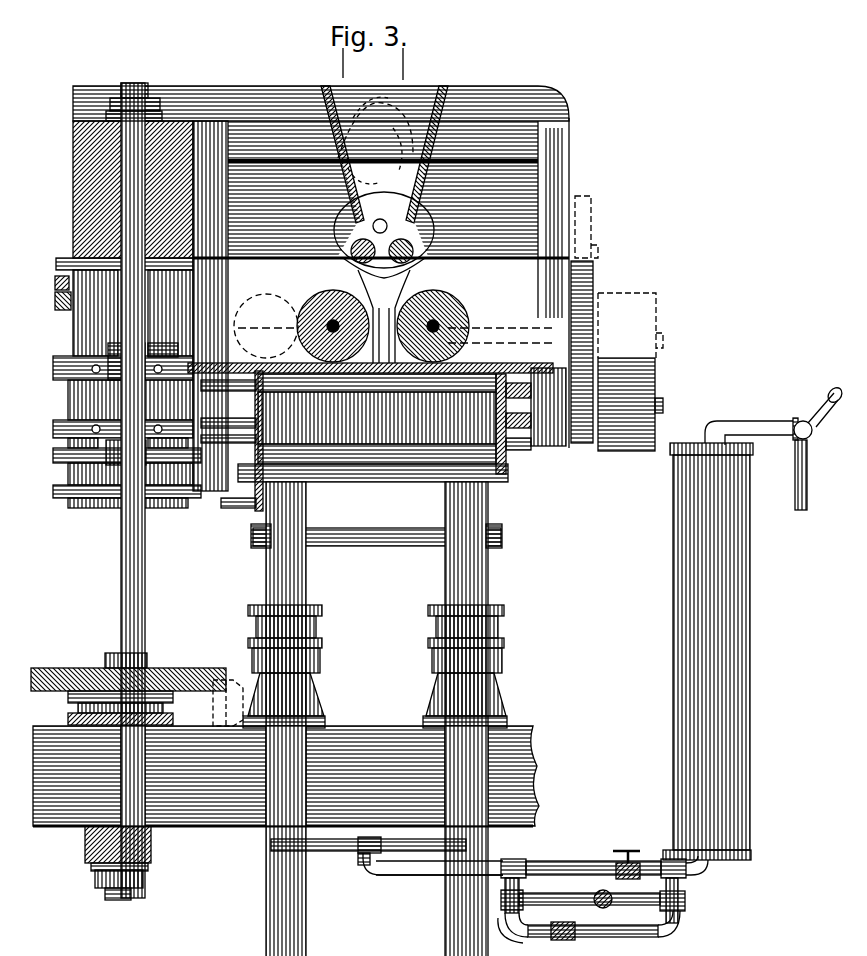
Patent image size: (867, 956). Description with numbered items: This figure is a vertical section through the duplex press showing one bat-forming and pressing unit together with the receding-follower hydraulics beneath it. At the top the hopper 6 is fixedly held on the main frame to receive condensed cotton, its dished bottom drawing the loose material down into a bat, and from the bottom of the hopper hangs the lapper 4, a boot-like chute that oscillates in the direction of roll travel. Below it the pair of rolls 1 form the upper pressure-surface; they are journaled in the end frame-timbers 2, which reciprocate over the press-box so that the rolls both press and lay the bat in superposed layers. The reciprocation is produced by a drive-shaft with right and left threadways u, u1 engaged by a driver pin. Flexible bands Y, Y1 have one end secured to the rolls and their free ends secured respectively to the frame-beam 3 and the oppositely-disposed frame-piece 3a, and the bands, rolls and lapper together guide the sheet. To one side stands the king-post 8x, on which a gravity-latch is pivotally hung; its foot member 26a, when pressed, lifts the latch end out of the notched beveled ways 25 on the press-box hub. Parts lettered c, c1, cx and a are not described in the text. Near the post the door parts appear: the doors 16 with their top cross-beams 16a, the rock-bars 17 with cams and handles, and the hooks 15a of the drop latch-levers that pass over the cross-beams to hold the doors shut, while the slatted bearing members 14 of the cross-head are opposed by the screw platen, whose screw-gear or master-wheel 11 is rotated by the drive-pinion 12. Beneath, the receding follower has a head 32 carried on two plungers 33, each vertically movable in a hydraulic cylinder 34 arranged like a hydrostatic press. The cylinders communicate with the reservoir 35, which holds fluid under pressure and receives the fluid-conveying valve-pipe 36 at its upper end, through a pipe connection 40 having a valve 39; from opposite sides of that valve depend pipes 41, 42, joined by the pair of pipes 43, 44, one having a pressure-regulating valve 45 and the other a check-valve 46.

The rolls 1 is at (318, 283).
The end frame-timbers 2 is at (462, 270).
The frame-beam 3 is at (210, 357).
The frame-piece 3a is at (538, 445).
The lapper 4 is at (384, 276).
The hopper 6 is at (384, 154).
The king-post 8x is at (132, 232).
The screw-gear or master-wheel 11 is at (155, 668).
The drive-pinion 12 is at (208, 698).
The slatted bearing members 14 is at (180, 250).
The hooks 15a is at (52, 262).
The doors 16 is at (133, 313).
The top cross-beams 16a is at (58, 300).
The bars 17 is at (52, 280).
The beveled ways 25 is at (78, 348).
The foot members 26a is at (165, 345).
The head 32 is at (512, 478).
The plungers 33 is at (290, 565).
The hydraulic cylinder 34 is at (256, 797).
The reservoir or receiver 35 is at (673, 638).
The fluid-conveying valve-pipe 36 is at (775, 447).
The valve 39 is at (618, 843).
The pipe connection 40 is at (538, 855).
The pipe 41 is at (492, 914).
The pipe 42 is at (670, 871).
The pipe 43 is at (634, 894).
The pipe 44 is at (617, 929).
The valve 45 is at (570, 923).
The check-valve 46 is at (588, 886).
The clutch member c is at (62, 386).
The clutch member c1 is at (62, 465).
The clutch member cx is at (490, 472).
The right threadway u is at (250, 380).
The left threadway u1 is at (250, 420).
The flexible band Y is at (226, 456).
The flexible band Y1 is at (514, 462).
The gear a is at (575, 269).